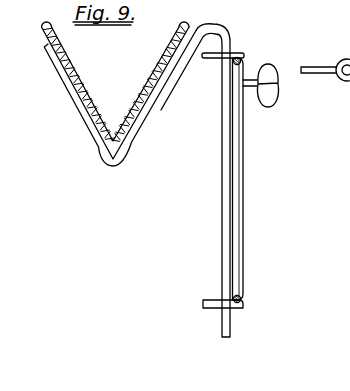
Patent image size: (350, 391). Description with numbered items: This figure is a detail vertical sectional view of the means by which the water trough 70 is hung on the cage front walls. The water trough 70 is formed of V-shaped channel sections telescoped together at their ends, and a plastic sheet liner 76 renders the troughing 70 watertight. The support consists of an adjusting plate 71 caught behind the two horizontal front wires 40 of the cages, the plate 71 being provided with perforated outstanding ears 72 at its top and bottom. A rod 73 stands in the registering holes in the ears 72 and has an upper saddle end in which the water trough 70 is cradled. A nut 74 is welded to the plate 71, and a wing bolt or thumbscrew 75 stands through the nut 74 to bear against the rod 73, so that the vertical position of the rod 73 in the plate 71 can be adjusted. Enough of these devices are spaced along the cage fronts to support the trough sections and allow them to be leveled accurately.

The horizontal wire 40 is at (239, 59).
The water trough 70 is at (82, 104).
The adjusting plate 71 is at (244, 188).
The perforated outstanding ears 72 is at (210, 59).
The rod 73 is at (222, 183).
The nut 74 is at (234, 102).
The wing bolt or thumbscrew 75 is at (277, 106).
The plastic sheet liner 76 is at (152, 90).